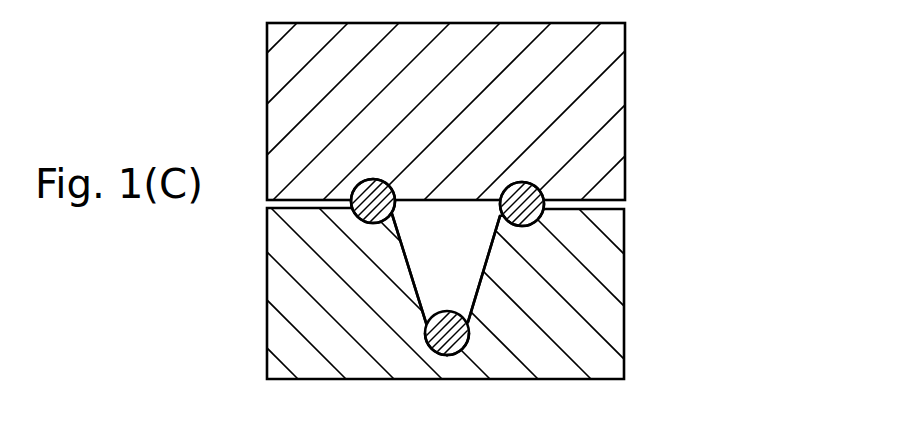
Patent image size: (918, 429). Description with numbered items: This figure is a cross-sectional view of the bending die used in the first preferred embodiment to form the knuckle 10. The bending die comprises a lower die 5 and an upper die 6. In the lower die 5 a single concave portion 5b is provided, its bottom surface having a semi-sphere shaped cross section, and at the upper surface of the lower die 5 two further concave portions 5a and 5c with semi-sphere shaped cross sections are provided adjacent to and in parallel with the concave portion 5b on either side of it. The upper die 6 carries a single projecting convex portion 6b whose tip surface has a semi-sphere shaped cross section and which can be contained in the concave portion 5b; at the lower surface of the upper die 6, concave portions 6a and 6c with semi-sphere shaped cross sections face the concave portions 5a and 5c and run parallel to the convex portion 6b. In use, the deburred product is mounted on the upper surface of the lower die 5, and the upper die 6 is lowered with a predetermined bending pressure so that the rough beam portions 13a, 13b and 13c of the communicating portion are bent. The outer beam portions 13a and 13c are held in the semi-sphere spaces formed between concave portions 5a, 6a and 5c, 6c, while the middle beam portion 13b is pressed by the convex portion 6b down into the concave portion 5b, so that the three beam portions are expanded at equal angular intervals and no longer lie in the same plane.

The lower die 5 is at (290, 292).
The upper die 6 is at (283, 103).
The concave portion 5a is at (368, 223).
The concave portion 5b is at (448, 355).
The concave portion 5c is at (526, 224).
The concave portion 6a is at (360, 183).
The convex portion 6b is at (479, 288).
The concave portion 6c is at (539, 186).
The beam portion 13a is at (380, 181).
The beam portion 13b is at (443, 311).
The beam portion 13c is at (514, 183).
The knuckle 10 is at (557, 183).